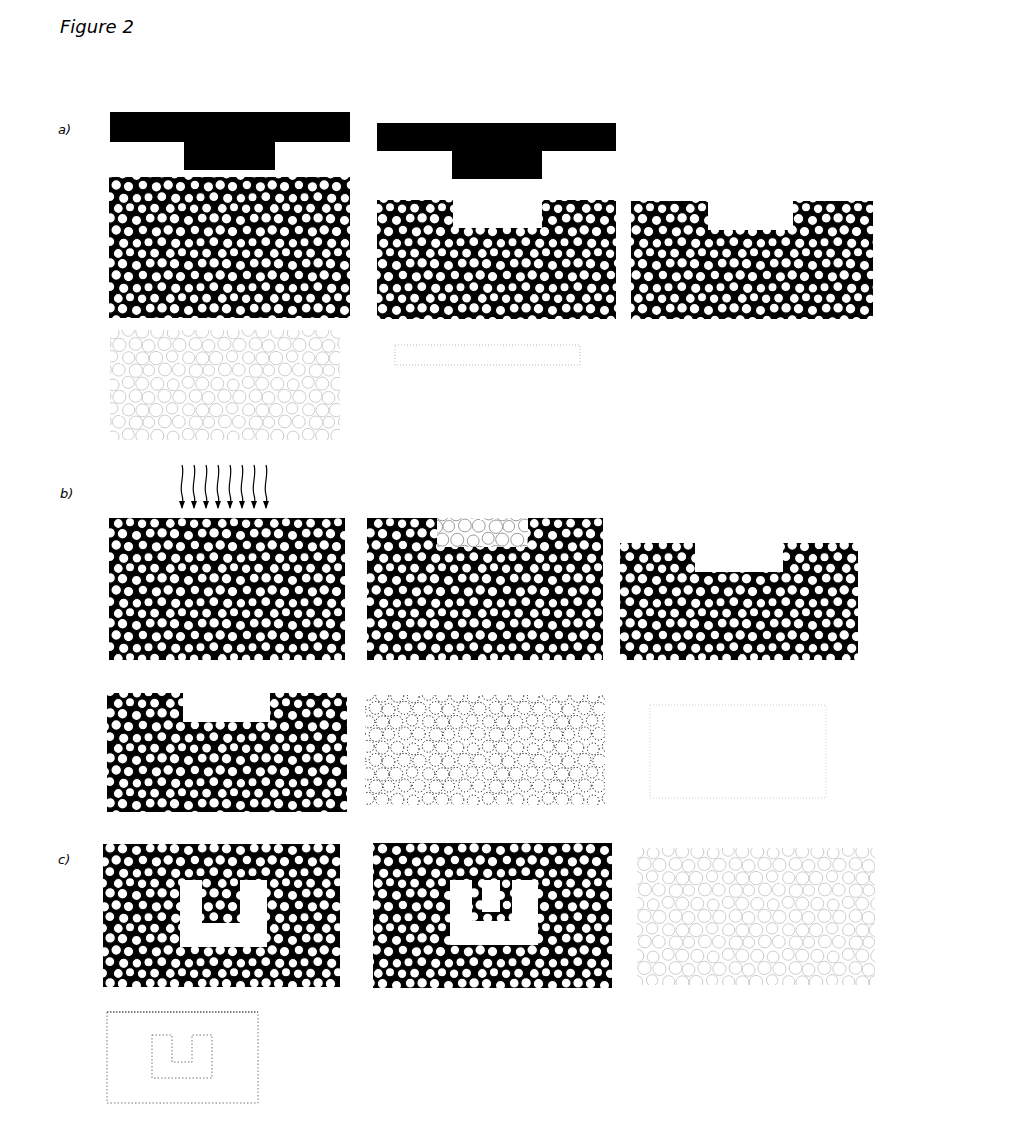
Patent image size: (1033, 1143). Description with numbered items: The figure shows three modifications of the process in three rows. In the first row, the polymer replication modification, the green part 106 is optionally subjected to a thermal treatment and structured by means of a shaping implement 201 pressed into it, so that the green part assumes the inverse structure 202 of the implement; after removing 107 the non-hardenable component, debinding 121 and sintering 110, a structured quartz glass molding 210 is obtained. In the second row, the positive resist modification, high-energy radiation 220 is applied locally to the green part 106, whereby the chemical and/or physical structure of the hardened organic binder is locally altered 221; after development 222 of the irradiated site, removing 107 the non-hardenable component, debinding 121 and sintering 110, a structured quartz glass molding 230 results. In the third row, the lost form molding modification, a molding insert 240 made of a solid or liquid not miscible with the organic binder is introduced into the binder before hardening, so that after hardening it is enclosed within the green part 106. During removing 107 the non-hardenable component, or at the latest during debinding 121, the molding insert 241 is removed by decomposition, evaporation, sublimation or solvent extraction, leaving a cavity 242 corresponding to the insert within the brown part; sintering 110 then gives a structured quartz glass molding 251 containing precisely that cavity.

The green part 106 is at (226, 571).
The removing the non-hardenable component 107 is at (670, 192).
The sintering 110 is at (410, 381).
The debinding 121 is at (98, 397).
The shaping implement 201 is at (363, 134).
The inverse structure 202 is at (496, 259).
The structured quartz glass molding 210 is at (487, 352).
The high-energy radiation 220 is at (241, 486).
The locally altered structure 221 is at (485, 579).
The development 222 is at (739, 601).
The structured quartz glass molding 230 is at (770, 733).
The molding insert 240 is at (223, 913).
The molding insert 241 is at (494, 913).
The cavity 242 is at (756, 916).
The structured quartz glass molding 251 is at (182, 1057).